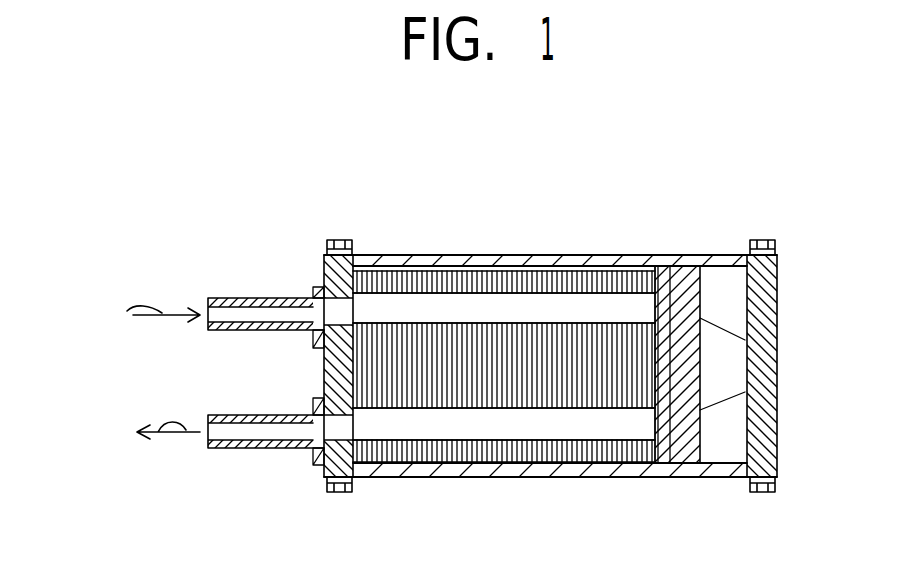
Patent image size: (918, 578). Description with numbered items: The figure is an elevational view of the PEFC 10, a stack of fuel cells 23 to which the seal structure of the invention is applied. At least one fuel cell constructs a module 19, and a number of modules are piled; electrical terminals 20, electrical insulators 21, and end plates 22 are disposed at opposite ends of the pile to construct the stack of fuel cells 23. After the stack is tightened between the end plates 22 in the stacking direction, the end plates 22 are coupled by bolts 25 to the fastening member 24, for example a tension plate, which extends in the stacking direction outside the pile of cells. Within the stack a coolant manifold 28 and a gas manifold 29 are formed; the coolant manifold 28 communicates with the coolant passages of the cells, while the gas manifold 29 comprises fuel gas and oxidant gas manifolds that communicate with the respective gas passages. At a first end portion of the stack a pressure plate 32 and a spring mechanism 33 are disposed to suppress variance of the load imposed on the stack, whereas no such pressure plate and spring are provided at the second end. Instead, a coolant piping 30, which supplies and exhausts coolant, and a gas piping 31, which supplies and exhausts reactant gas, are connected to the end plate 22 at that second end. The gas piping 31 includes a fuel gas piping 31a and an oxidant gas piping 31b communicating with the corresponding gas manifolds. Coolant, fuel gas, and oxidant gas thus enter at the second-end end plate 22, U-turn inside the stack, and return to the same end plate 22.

The PEFC 10 is at (226, 140).
The module 19 is at (455, 283).
The electrical terminals 20 is at (654, 268).
The electrical insulators 21 is at (660, 268).
The end plates 22 is at (322, 268).
The stack of fuel cells 23 is at (489, 262).
The fastening member 24 is at (550, 338).
The bolts 25 is at (337, 240).
The coolant manifold 28 is at (368, 308).
The gas manifold 29 is at (504, 459).
The coolant piping 30 is at (221, 344).
The gas piping 31 is at (221, 465).
The fuel gas piping 31a is at (318, 334).
The oxidant gas piping 31b is at (318, 452).
The pressure plate 32 is at (684, 268).
The spring mechanism 33 is at (720, 343).